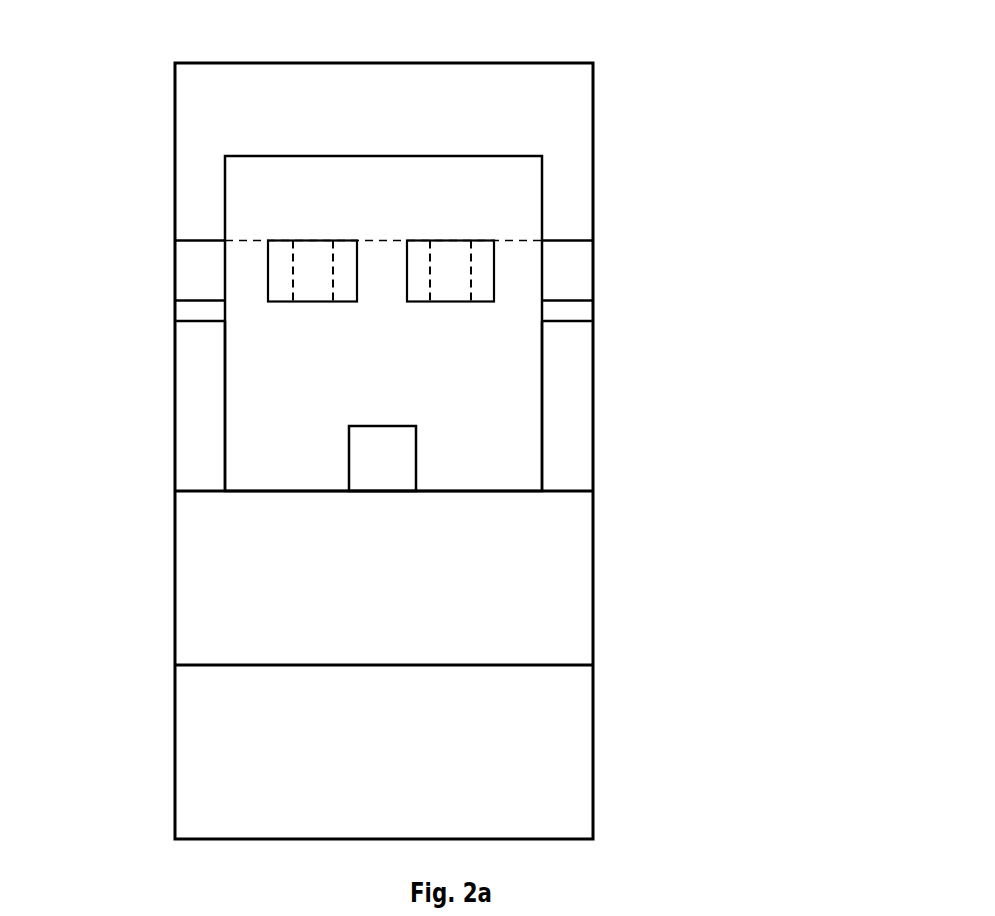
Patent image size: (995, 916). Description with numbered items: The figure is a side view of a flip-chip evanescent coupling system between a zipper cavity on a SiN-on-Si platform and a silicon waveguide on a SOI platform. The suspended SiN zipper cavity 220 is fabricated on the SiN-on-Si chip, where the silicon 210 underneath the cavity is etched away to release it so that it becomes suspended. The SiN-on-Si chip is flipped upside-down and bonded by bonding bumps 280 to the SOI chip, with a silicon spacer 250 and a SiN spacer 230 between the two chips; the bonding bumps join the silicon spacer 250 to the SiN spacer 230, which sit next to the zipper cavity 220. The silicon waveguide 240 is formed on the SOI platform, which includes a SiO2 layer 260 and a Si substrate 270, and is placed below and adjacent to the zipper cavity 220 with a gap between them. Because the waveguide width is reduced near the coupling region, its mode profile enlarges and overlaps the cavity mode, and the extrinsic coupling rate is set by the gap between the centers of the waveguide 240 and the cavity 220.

The silicon 210 is at (580, 101).
The suspended SiN zipper cavity 220 is at (398, 230).
The SiN spacer 230 is at (580, 266).
The silicon waveguide 240 is at (356, 463).
The silicon spacer 250 is at (590, 434).
The SiO2 layer 260 is at (537, 591).
The Si substrate 270 is at (544, 757).
The bonding bumps 280 is at (198, 309).